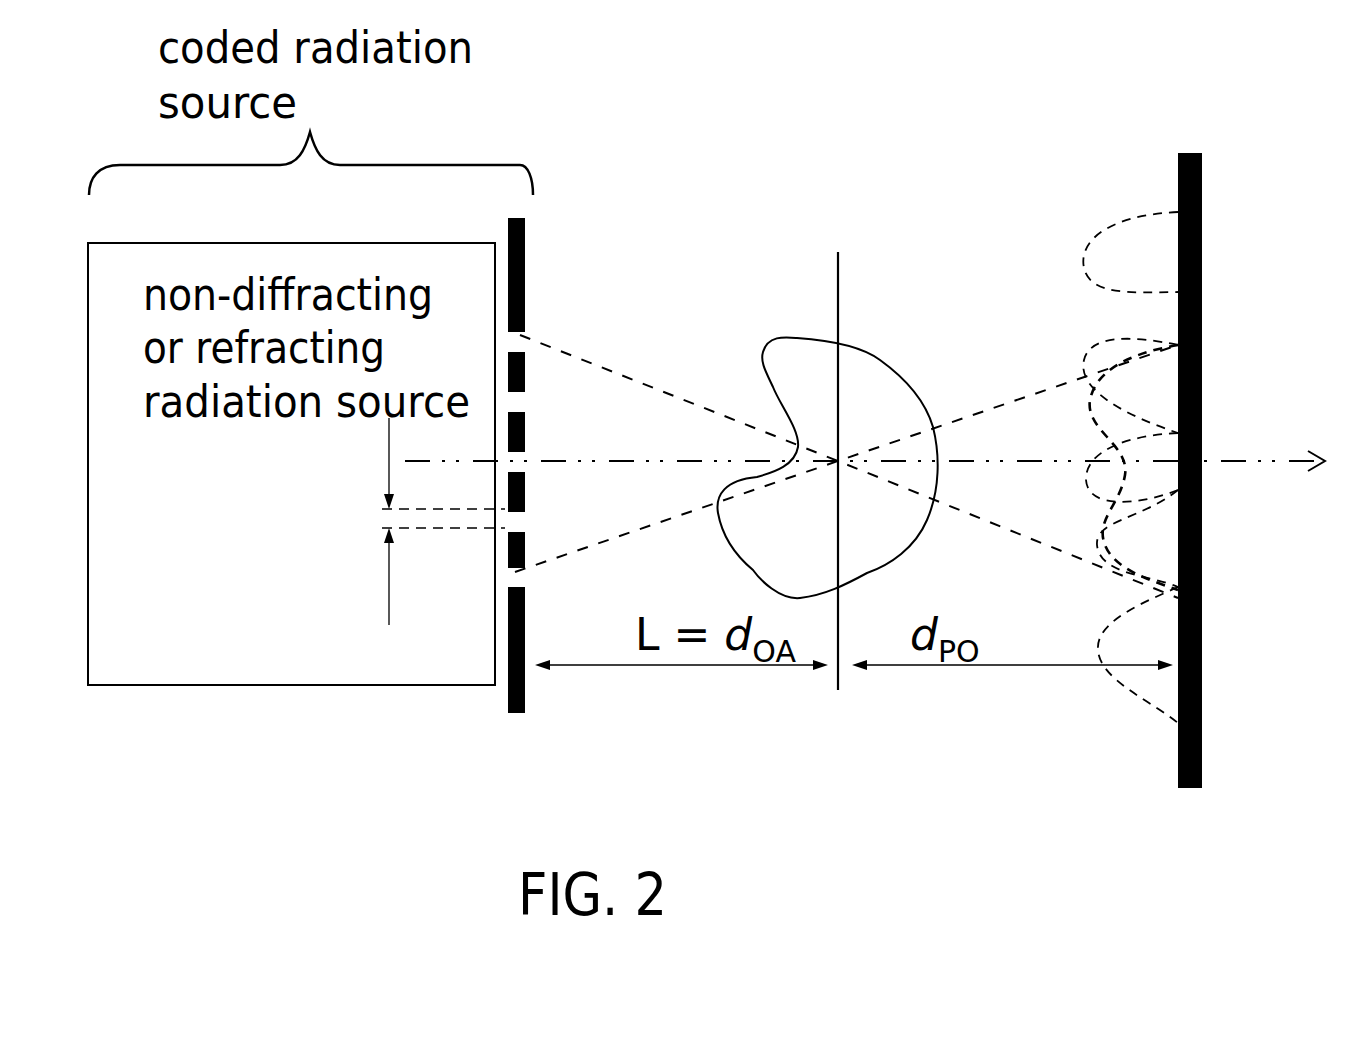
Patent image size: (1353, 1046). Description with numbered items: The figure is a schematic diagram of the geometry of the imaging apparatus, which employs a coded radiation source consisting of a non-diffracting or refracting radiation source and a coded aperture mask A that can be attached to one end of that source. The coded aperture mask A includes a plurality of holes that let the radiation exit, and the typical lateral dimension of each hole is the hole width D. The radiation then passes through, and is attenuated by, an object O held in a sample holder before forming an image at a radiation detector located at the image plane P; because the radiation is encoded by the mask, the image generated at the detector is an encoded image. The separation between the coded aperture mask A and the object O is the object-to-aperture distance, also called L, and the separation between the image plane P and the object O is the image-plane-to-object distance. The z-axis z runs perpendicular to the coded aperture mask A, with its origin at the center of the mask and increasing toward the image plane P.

The coded aperture mask A is at (503, 501).
The hole width D is at (427, 521).
The object O is at (825, 480).
The image plane P is at (1146, 510).
The z-axis z is at (876, 481).